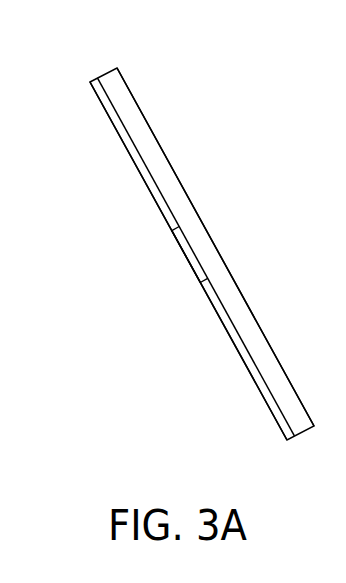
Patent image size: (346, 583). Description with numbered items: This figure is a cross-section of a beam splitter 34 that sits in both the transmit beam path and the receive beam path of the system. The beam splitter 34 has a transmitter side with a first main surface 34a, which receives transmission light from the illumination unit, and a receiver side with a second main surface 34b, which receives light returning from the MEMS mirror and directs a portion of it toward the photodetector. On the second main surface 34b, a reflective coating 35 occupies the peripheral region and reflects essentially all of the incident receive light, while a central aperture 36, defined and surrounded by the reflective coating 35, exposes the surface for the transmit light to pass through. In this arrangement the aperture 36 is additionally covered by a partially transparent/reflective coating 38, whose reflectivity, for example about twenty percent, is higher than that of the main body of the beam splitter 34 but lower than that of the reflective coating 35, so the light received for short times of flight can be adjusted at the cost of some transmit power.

The beam splitter 34 is at (115, 69).
The first main surface 34a is at (152, 118).
The second main surface 34b is at (106, 114).
The reflective coating 35 is at (138, 171).
The aperture 36 is at (182, 284).
The partially transparent/reflective coating 38 is at (185, 260).